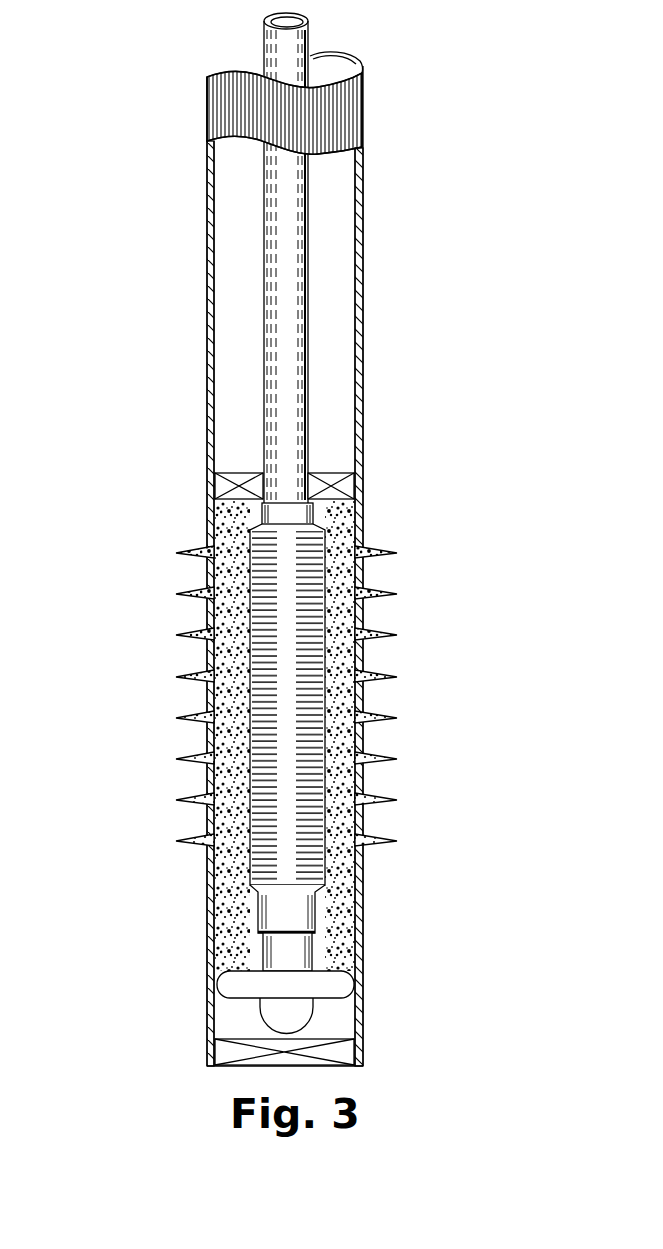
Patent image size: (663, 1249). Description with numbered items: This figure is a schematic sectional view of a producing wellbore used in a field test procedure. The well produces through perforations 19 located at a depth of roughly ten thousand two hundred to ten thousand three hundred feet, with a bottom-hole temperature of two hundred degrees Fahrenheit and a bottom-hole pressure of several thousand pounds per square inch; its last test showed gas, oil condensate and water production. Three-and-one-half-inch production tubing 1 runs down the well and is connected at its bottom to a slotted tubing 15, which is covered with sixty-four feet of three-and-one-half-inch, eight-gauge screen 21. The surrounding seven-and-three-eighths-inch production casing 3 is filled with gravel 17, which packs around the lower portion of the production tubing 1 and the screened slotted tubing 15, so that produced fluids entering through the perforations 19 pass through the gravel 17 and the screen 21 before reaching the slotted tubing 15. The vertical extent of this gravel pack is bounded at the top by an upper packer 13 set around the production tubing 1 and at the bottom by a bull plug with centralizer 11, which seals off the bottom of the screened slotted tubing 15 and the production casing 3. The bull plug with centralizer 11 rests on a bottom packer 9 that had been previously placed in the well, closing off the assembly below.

The production tubing 1 is at (265, 34).
The production casing 3 is at (208, 107).
The bottom packer 9 is at (345, 1049).
The bull plug with centralizer 11 is at (228, 982).
The upper packer 13 is at (222, 485).
The slotted tubing 15 is at (272, 903).
The gravel 17 is at (345, 910).
The perforations 19 is at (182, 757).
The screen 21 is at (262, 582).